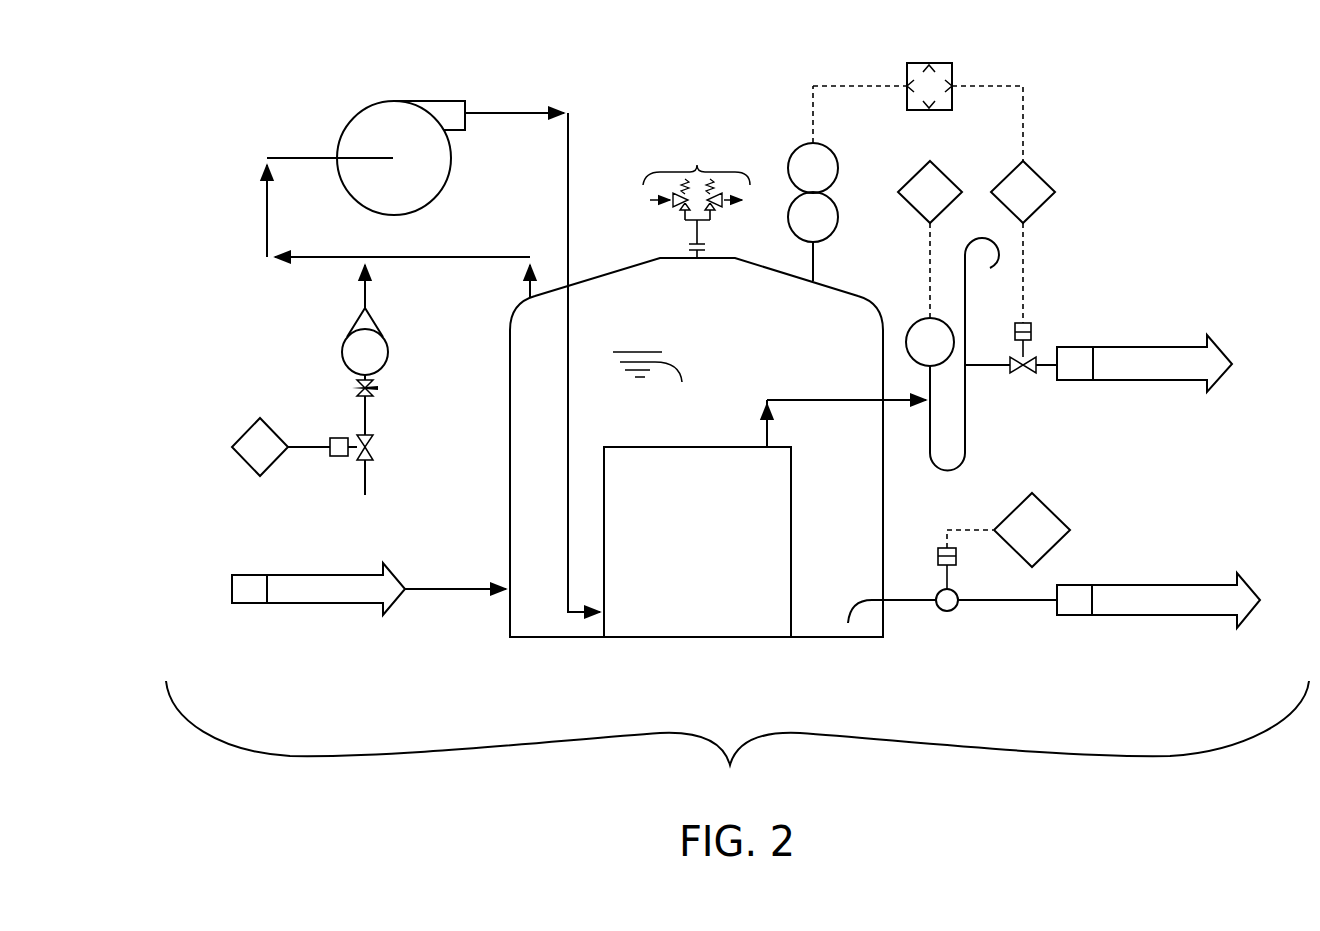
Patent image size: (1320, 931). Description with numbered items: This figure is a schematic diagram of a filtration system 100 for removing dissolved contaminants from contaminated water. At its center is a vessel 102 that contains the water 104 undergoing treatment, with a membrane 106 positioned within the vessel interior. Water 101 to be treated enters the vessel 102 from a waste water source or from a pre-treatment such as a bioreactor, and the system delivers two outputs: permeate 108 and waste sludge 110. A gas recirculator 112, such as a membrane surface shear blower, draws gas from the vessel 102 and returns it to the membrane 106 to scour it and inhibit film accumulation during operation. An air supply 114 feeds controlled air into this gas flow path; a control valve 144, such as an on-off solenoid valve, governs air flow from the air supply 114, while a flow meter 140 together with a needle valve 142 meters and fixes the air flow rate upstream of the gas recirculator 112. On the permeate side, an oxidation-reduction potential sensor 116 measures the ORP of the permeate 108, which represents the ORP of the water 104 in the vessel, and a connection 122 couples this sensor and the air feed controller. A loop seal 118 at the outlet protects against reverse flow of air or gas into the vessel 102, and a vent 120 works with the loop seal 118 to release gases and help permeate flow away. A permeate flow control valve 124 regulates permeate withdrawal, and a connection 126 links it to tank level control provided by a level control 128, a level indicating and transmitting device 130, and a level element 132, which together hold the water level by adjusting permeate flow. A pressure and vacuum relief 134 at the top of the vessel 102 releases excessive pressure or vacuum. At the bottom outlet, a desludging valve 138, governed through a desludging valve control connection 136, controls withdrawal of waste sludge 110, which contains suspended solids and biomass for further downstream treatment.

The filtration system 100 is at (737, 739).
The water to be treated 101 is at (302, 600).
The vessel 102 is at (572, 637).
The water 104 is at (658, 380).
The membrane 106 is at (682, 548).
The permeate 108 is at (1129, 377).
The waste sludge 110 is at (1132, 613).
The gas recirculator 112 is at (376, 143).
The air supply 114 is at (362, 487).
The oxidation-reduction potential sensor 116 is at (912, 354).
The loop seal 118 is at (942, 468).
The vent 120 is at (988, 309).
The connection to air feed controller 122 is at (262, 446).
The permeate flow control valve 124 is at (1034, 372).
The connection to tank level control 126 is at (1005, 205).
The level control 128 is at (918, 63).
The level indicating and transmitting device 130 is at (795, 180).
The level element 132 is at (795, 229).
The pressure and vacuum relief 134 is at (696, 199).
The desludging valve control connection 136 is at (1014, 542).
The desludging valve 138 is at (951, 610).
The flow meter 140 is at (370, 353).
The needle valve 142 is at (380, 392).
The control valve 144 is at (340, 445).